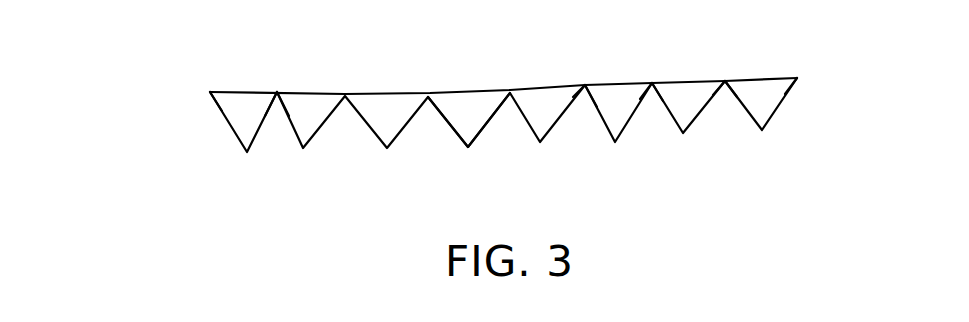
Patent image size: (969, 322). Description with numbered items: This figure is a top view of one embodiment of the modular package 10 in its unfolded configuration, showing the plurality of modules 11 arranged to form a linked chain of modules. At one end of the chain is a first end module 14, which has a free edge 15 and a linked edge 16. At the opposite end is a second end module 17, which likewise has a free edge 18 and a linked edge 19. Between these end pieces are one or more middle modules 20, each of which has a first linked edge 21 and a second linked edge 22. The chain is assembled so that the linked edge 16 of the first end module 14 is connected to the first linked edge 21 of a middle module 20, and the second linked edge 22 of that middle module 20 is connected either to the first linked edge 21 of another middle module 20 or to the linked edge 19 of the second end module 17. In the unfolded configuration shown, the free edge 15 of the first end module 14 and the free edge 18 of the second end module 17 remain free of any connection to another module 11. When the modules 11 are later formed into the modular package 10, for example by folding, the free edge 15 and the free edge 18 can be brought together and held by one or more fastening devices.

The modular package 10 is at (174, 90).
The plurality of modules 11 is at (466, 106).
The first end module 14 is at (241, 98).
The free edge 15 is at (206, 79).
The linked edge 16 is at (280, 83).
The second end module 17 is at (757, 88).
The free edge 18 is at (797, 69).
The linked edge 19 is at (723, 72).
The middle module 20 is at (614, 96).
The first linked edge 21 is at (583, 76).
The second linked edge 22 is at (652, 74).